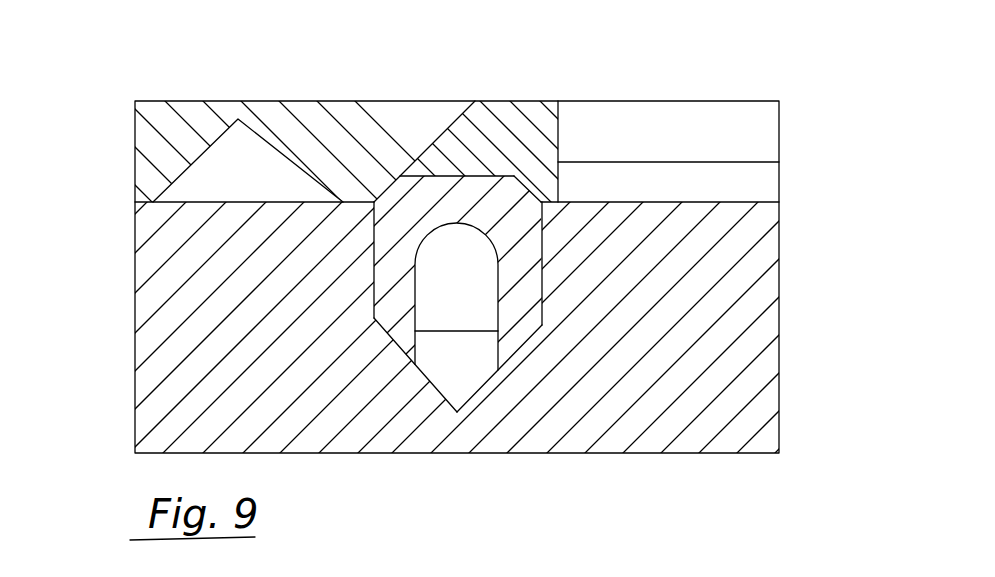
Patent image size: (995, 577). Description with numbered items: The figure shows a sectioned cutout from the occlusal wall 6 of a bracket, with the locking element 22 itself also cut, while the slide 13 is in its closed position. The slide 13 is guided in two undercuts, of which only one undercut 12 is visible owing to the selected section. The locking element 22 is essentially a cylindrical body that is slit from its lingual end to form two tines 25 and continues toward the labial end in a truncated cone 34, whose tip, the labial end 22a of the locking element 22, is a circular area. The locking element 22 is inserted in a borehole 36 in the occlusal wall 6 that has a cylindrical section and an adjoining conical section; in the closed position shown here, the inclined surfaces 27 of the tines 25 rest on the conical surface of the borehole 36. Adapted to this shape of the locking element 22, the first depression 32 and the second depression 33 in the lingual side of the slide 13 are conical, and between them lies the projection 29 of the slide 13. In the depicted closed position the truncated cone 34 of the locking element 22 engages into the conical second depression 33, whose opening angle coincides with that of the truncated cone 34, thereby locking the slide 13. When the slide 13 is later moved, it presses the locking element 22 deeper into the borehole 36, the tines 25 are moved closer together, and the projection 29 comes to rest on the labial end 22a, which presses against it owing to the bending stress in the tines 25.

The occlusal wall 6 is at (687, 442).
The undercut 12 is at (752, 182).
The slide 13 is at (173, 115).
The locking element 22 is at (390, 242).
The labial end of the locking element 22a is at (462, 176).
The tines 25 is at (518, 252).
The inclined surfaces 27 is at (666, 324).
The projection 29 is at (352, 195).
The first depression 32 is at (227, 158).
The second depression 33 is at (455, 137).
The truncated cone 34 is at (522, 190).
The borehole 36 is at (482, 320).